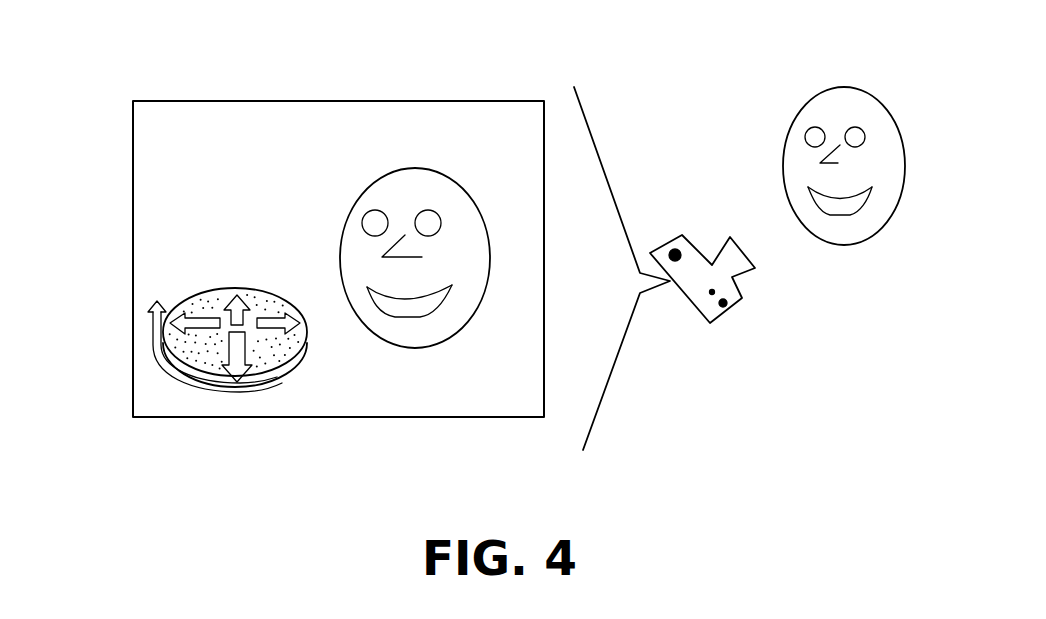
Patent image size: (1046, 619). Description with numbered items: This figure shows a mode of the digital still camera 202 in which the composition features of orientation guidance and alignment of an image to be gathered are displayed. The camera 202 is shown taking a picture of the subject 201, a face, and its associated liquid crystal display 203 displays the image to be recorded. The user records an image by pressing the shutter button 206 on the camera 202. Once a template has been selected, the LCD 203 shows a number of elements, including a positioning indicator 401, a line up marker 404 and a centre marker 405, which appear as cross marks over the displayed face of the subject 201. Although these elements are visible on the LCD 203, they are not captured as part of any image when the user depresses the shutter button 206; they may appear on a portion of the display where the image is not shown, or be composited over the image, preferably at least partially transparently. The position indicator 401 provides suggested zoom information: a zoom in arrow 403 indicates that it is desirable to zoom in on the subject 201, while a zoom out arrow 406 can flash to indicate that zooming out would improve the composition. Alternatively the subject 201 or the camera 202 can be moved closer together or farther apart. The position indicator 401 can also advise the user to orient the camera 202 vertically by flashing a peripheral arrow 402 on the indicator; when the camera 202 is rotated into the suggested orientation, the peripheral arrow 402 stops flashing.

The subject matter 201 is at (848, 87).
The digital still camera 202 is at (738, 285).
The liquid crystal display 203 is at (220, 418).
The shutter button 206 is at (675, 250).
The positioning indicator 401 is at (198, 293).
The peripheral arrow 402 is at (150, 328).
The zoom in arrow 403 is at (233, 310).
The line up marker 404 is at (410, 268).
The centre marker 405 is at (335, 265).
The zoom out arrow 406 is at (237, 343).